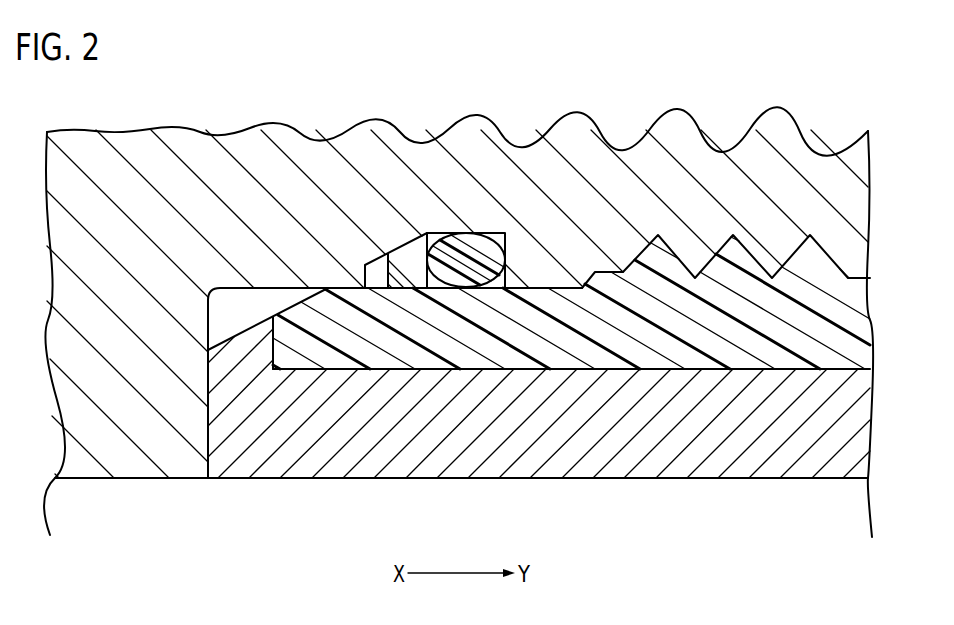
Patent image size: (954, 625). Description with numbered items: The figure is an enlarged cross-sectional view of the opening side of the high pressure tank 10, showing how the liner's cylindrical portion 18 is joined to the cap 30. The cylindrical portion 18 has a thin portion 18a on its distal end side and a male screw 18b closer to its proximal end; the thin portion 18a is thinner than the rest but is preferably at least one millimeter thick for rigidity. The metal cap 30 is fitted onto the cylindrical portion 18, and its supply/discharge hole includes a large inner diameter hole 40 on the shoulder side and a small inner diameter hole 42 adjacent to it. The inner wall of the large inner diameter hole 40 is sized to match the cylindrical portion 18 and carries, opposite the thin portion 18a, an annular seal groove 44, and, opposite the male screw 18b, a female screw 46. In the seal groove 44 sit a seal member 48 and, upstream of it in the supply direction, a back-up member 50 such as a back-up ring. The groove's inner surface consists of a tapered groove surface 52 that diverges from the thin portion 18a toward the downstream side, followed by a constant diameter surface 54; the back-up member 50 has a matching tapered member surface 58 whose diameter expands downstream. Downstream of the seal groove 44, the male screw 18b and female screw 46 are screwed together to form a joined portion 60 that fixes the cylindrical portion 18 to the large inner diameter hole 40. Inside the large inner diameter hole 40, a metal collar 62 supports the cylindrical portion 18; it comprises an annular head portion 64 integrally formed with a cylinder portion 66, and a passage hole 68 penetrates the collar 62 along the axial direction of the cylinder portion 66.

The high pressure tank 10 is at (769, 57).
The cylindrical portion 18 is at (627, 340).
The thin portion 18a is at (300, 360).
The male screw 18b is at (832, 257).
The cap 30 is at (792, 150).
The large inner diameter hole 40 is at (252, 288).
The small inner diameter hole 42 is at (152, 479).
The seal groove 44 is at (497, 292).
The female screw 46 is at (790, 258).
The seal member 48 is at (470, 252).
The back-up member 50 is at (412, 260).
The tapered groove surface 52 is at (376, 292).
The constant diameter surface 54 is at (441, 292).
The tapered member surface 58 is at (396, 258).
The joined portion 60 is at (682, 195).
The collar 62 is at (746, 484).
The head portion 64 is at (223, 337).
The cylinder portion 66 is at (550, 470).
The passage hole 68 is at (700, 479).